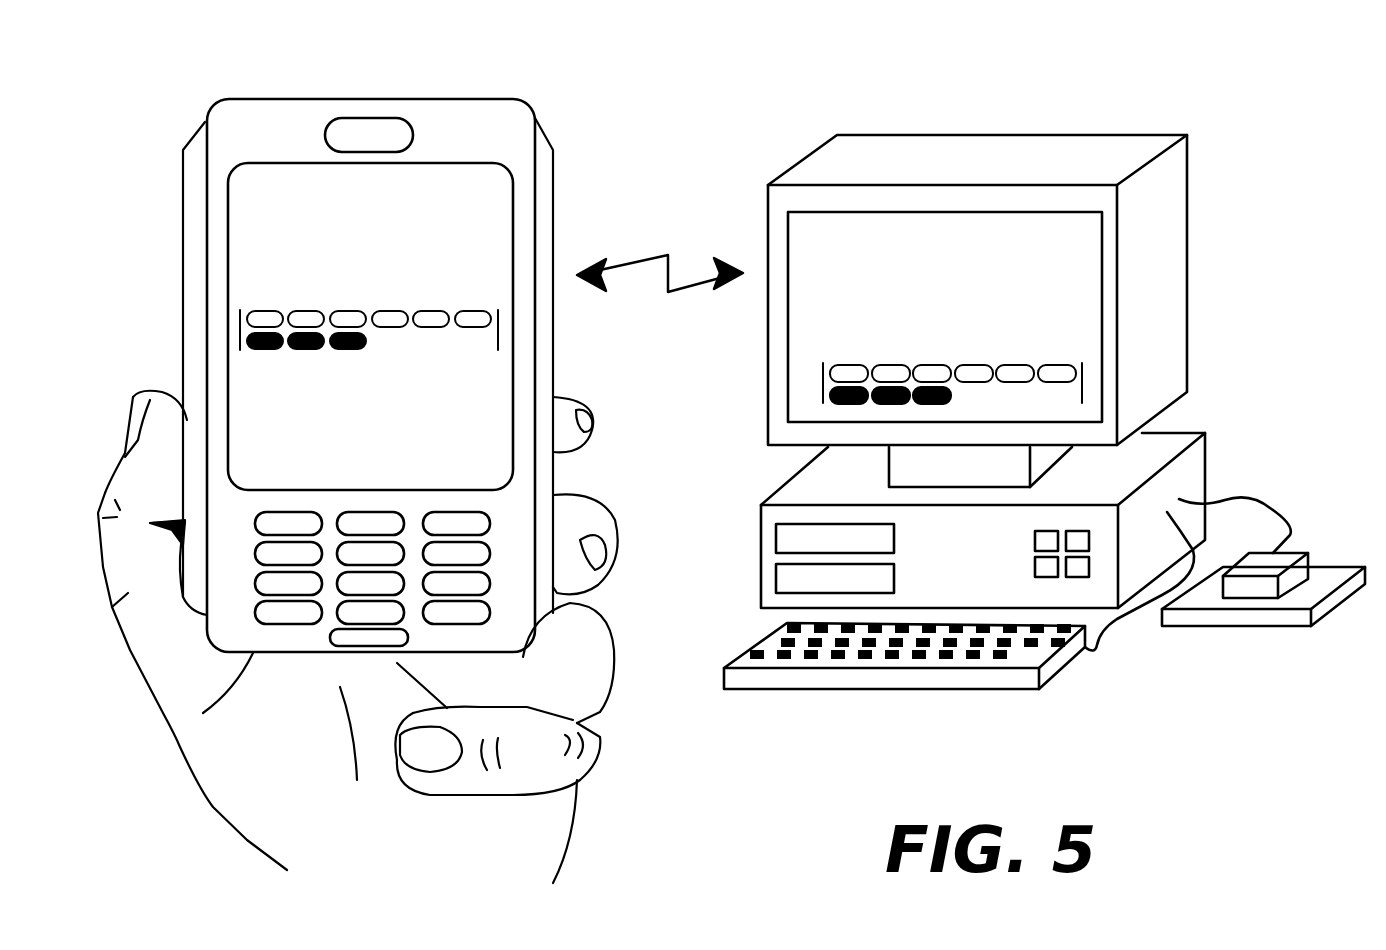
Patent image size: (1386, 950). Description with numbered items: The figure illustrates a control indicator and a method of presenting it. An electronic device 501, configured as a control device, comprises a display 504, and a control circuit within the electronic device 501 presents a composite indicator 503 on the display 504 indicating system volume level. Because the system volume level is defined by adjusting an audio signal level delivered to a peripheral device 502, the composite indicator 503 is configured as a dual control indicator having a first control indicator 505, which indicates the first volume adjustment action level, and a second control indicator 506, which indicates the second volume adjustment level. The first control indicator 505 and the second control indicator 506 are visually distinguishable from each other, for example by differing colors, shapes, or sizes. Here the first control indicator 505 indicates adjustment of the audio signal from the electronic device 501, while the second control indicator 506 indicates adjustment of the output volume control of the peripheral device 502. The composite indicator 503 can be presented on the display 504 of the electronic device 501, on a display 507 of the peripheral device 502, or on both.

The electronic device 501 is at (425, 113).
The peripheral device 502 is at (1157, 257).
The composite indicator 503 is at (369, 320).
The display 504 is at (250, 245).
The first control indicator 505 is at (393, 308).
The second control indicator 506 is at (307, 350).
The display 507 is at (880, 243).